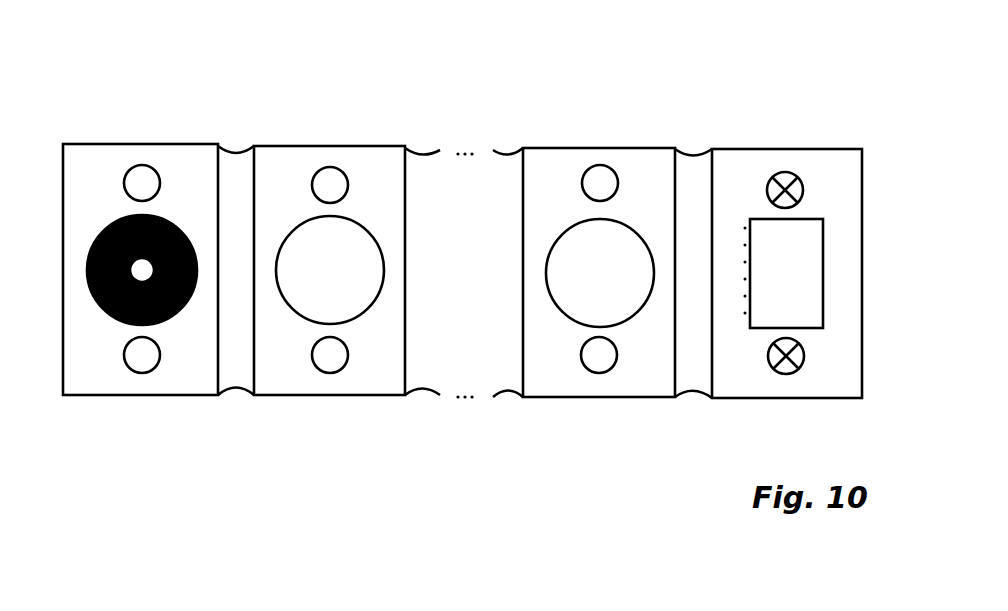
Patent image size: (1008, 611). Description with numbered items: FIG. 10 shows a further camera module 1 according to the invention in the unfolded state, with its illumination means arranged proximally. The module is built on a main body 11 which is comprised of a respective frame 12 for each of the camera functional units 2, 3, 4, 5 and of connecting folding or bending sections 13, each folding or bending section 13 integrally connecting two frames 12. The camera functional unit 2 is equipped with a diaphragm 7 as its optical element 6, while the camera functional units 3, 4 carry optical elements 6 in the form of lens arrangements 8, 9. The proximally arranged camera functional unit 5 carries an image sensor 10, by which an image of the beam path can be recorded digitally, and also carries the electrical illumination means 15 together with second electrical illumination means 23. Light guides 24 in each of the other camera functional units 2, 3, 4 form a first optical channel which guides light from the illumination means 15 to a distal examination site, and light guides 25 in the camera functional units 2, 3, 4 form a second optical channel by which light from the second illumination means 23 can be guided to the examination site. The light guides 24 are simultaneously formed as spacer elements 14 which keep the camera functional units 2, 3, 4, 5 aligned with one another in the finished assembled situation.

The camera module 1 is at (562, 50).
The camera functional unit 2 is at (127, 440).
The camera functional unit 3 is at (322, 432).
The camera functional unit 4 is at (594, 432).
The camera functional unit 5 is at (771, 105).
The optical element 6 is at (176, 205).
The diaphragm 7 is at (125, 322).
The lens arrangement 8 is at (350, 312).
The lens arrangement 9 is at (626, 310).
The image sensor 10 is at (808, 318).
The main body 11 is at (531, 399).
The frame 12 is at (198, 396).
The folding or bending section 13 is at (235, 395).
The spacer element 14 is at (356, 168).
The electrical illumination means 15 is at (787, 182).
The second electrical illumination means 23 is at (786, 368).
The light guide 24 is at (141, 178).
The light guide 25 is at (142, 365).